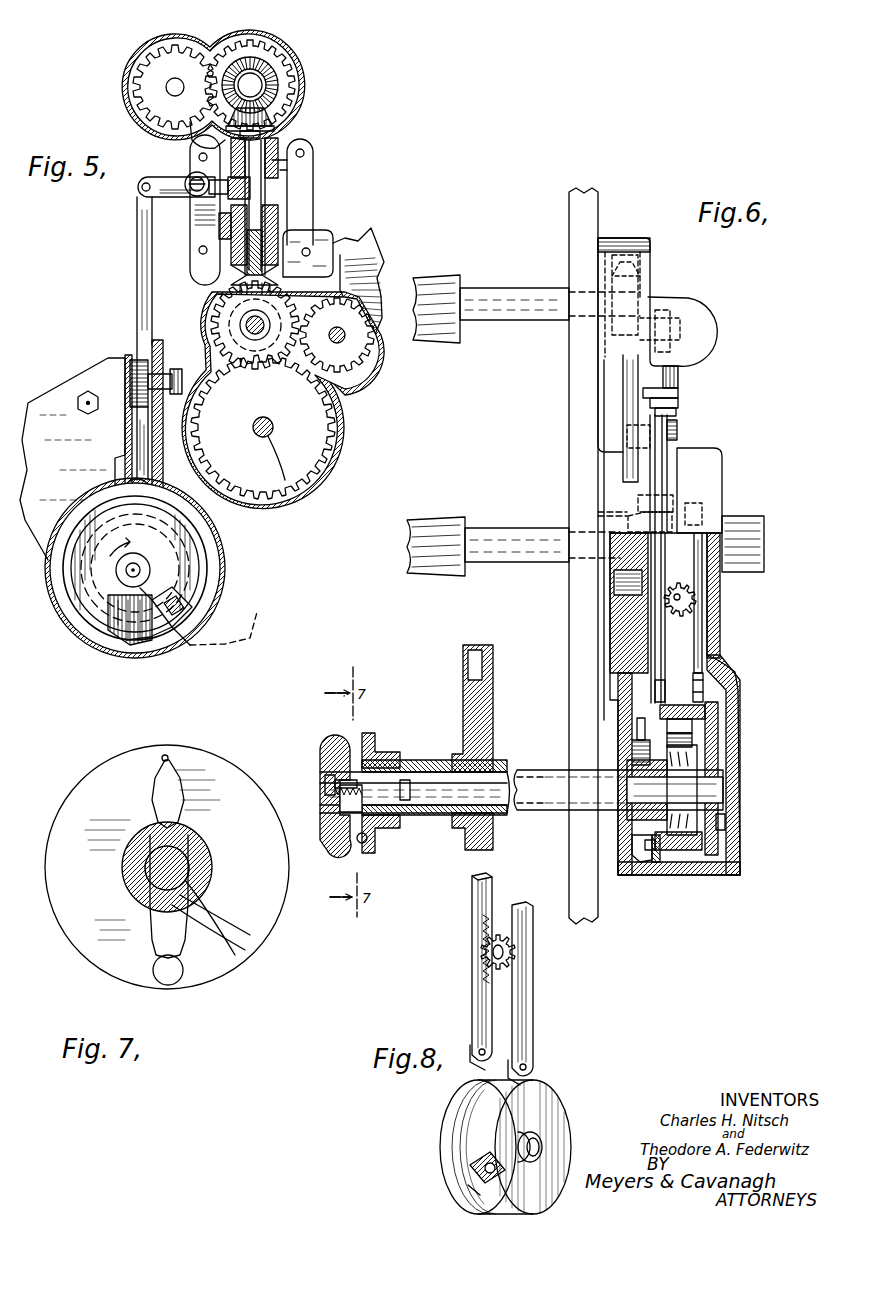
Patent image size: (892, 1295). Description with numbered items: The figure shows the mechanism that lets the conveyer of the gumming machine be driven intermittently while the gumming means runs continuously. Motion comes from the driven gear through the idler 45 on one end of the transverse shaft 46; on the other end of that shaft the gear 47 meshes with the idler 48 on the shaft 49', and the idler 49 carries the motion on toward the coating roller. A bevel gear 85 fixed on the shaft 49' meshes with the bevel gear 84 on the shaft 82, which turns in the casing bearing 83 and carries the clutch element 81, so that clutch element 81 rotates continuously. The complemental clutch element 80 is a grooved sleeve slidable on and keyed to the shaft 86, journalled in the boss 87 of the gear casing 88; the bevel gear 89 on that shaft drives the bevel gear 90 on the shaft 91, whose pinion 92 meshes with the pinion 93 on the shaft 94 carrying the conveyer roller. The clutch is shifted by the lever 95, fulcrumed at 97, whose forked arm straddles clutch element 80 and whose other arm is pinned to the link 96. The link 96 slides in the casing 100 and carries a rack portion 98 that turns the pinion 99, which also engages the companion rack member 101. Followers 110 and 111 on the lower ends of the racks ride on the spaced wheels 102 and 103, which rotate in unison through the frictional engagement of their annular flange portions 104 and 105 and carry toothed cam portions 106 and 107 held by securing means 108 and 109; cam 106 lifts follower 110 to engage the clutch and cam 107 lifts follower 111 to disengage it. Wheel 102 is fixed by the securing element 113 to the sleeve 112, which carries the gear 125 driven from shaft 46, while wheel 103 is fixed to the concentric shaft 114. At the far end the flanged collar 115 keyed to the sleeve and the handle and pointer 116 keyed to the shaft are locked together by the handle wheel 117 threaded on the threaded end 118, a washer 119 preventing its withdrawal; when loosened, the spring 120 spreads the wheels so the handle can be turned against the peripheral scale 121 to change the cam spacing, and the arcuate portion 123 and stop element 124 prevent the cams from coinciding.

In FIG. 5, the idler 45 is at (160, 178).
In FIG. 5, the transverse shaft 46 is at (300, 478).
In FIG. 5, the gear 47 is at (308, 452).
In FIG. 5, the idler 48 is at (220, 322).
In FIG. 5, the idler 49 is at (346, 354).
In FIG. 5, the shaft 49' is at (219, 310).
In FIG. 5, the clutch element 80 is at (300, 160).
In FIG. 6, the clutch element 80 is at (678, 394).
In FIG. 5, the clutch element 81 is at (280, 215).
In FIG. 6, the clutch element 81 is at (678, 428).
In FIG. 5, the shaft 82 is at (280, 240).
In FIG. 6, the shaft 82 is at (700, 470).
In FIG. 5, the casing bearing 83 is at (313, 245).
In FIG. 5, the bevel gear 84 is at (372, 255).
In FIG. 6, the bevel gear 84 is at (700, 485).
In FIG. 5, the bevel gear 85 is at (355, 402).
In FIG. 6, the bevel gear 85 is at (615, 516).
In FIG. 5, the shaft 86 is at (255, 160).
In FIG. 5, the boss 87 is at (282, 135).
In FIG. 6, the boss 87 is at (680, 372).
In FIG. 5, the gear casing 88 is at (290, 70).
In FIG. 6, the gear casing 88 is at (640, 238).
In FIG. 5, the bevel gear 89 is at (268, 100).
In FIG. 6, the bevel gear 89 is at (680, 315).
In FIG. 5, the bevel gear 90 is at (252, 60).
In FIG. 6, the bevel gear 90 is at (648, 272).
In FIG. 5, the shaft 91 is at (280, 75).
In FIG. 5, the pinion 92 is at (220, 58).
In FIG. 5, the pinion 93 is at (180, 50).
In FIG. 5, the shaft 94 is at (172, 86).
In FIG. 6, the lever 95 is at (676, 412).
In FIG. 5, the link 96 is at (140, 240).
In FIG. 6, the link 96 is at (682, 460).
In FIG. 8, the link 96 is at (476, 894).
In FIG. 5, the fulcrum 97 is at (192, 190).
In FIG. 6, the fulcrum 97 is at (678, 403).
In FIG. 5, the rack portion 98 is at (132, 360).
In FIG. 6, the rack portion 98 is at (645, 605).
In FIG. 8, the rack portion 98 is at (485, 936).
In FIG. 5, the pinion 99 is at (127, 375).
In FIG. 6, the pinion 99 is at (685, 582).
In FIG. 8, the pinion 99 is at (492, 930).
In FIG. 5, the casing 100 is at (190, 505).
In FIG. 6, the casing 100 is at (738, 640).
In FIG. 6, the rack member 101 is at (703, 604).
In FIG. 8, the rack member 101 is at (528, 993).
In FIG. 6, the wheel 102 is at (712, 712).
In FIG. 8, the wheel 102 is at (443, 1140).
In FIG. 5, the wheel 103 is at (190, 560).
In FIG. 6, the wheel 103 is at (718, 724).
In FIG. 8, the wheel 103 is at (550, 1115).
In FIG. 6, the annular flange portion 104 is at (700, 738).
In FIG. 6, the annular flange portion 105 is at (700, 755).
In FIG. 5, the cam portion 106 is at (160, 650).
In FIG. 6, the cam portion 106 is at (672, 855).
In FIG. 8, the cam portion 106 is at (460, 1098).
In FIG. 5, the cam portion 107 is at (185, 600).
In FIG. 6, the cam portion 107 is at (706, 845).
In FIG. 8, the cam portion 107 is at (465, 1190).
In FIG. 6, the securing means 108 is at (648, 862).
In FIG. 6, the securing means 109 is at (724, 822).
In FIG. 6, the roller 110 is at (655, 692).
In FIG. 8, the roller 110 is at (470, 1063).
In FIG. 6, the roller 111 is at (705, 688).
In FIG. 8, the roller 111 is at (533, 1075).
In FIG. 6, the sleeve 112 is at (530, 770).
In FIG. 6, the securing element 113 is at (640, 728).
In FIG. 6, the shaft 114 is at (722, 786).
In FIG. 7, the shaft 114 is at (250, 935).
In FIG. 6, the flanged collar 115 is at (385, 760).
In FIG. 7, the flanged collar 115 is at (182, 762).
In FIG. 6, the handle and pointer 116 is at (360, 840).
In FIG. 7, the handle and pointer 116 is at (165, 790).
In FIG. 6, the handle wheel 117 is at (335, 745).
In FIG. 7, the handle wheel 117 is at (235, 955).
In FIG. 6, the threaded end 118 is at (323, 792).
In FIG. 6, the washer 119 is at (325, 778).
In FIG. 6, the spring 120 is at (700, 770).
In FIG. 7, the peripheral scale 121 is at (118, 766).
In FIG. 5, the arcuate portion 123 is at (125, 628).
In FIG. 5, the stop element 124 is at (257, 630).
In FIG. 6, the gear 125 is at (470, 648).